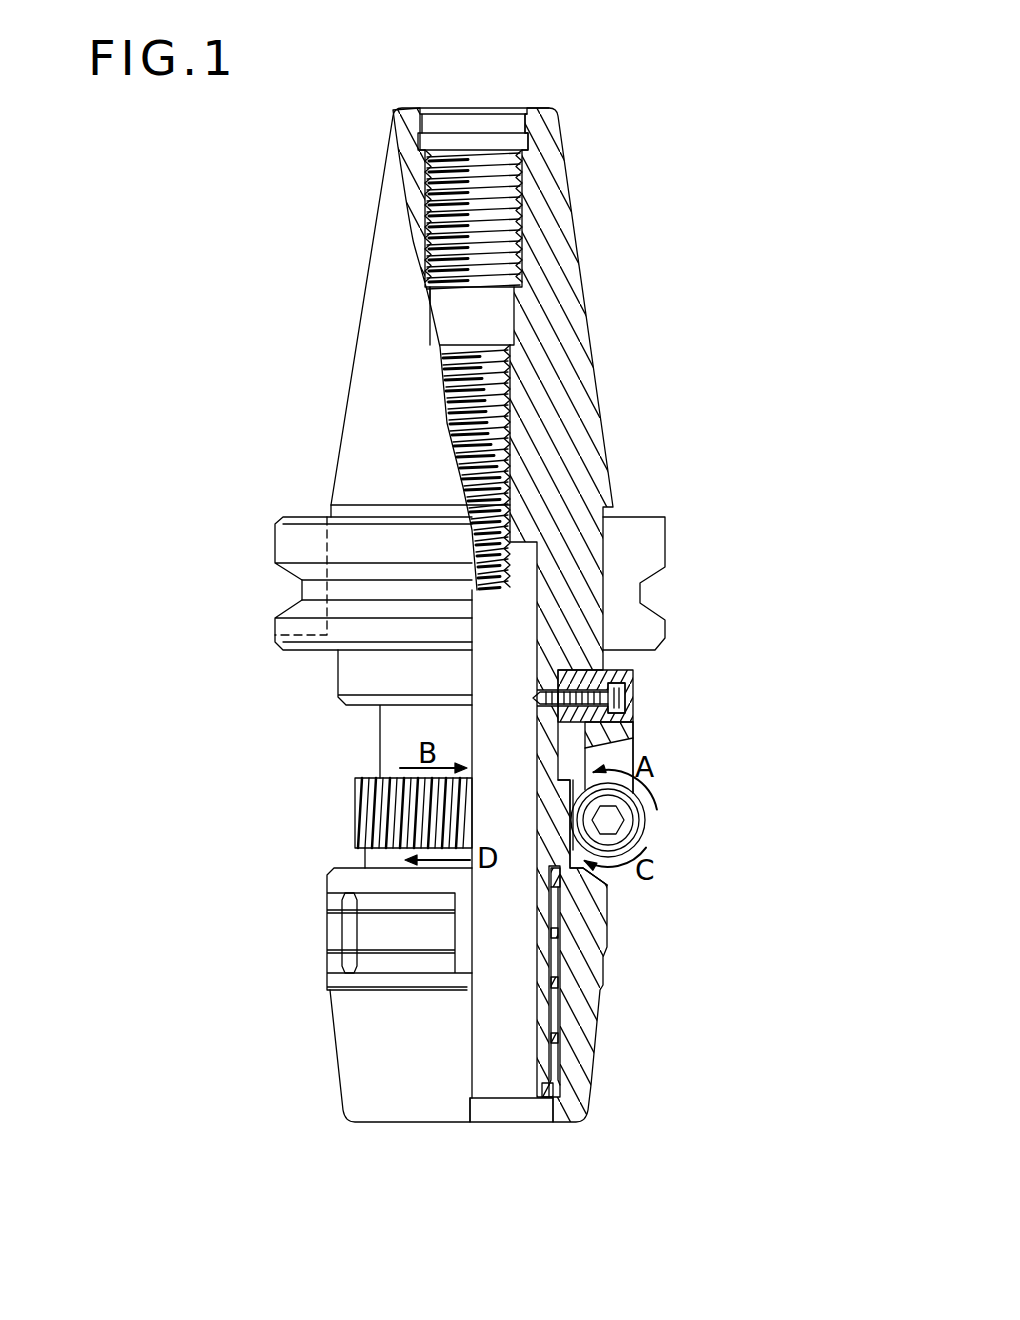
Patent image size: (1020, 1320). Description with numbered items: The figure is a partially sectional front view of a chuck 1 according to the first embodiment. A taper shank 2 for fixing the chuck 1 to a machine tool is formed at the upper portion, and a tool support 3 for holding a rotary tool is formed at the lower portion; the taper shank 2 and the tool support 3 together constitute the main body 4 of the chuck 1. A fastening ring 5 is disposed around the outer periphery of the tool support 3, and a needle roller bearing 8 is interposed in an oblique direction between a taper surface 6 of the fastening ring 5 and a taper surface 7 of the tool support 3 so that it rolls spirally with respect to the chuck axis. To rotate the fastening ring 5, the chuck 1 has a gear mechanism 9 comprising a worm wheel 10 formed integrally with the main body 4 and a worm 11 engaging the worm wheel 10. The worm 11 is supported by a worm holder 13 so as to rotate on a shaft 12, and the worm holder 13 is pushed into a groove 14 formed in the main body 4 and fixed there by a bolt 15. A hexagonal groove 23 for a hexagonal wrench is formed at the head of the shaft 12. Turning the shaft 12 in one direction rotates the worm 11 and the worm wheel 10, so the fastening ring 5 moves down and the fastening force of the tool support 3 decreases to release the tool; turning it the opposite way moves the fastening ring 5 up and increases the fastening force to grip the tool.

The chuck 1 is at (630, 346).
The taper shank 2 is at (362, 377).
The tool support 3 is at (540, 1063).
The main body 4 is at (353, 672).
The fastening ring 5 is at (357, 1058).
The taper surface 6 is at (552, 933).
The taper surface 7 is at (557, 1060).
The needle roller bearing 8 is at (563, 1017).
The gear mechanism 9 is at (338, 808).
The worm wheel 10 is at (357, 830).
The worm 11 is at (603, 870).
The shaft 12 is at (630, 793).
The worm holder 13 is at (635, 750).
The groove 14 is at (578, 670).
The bolt 15 is at (633, 687).
The hexagonal groove 23 is at (612, 820).